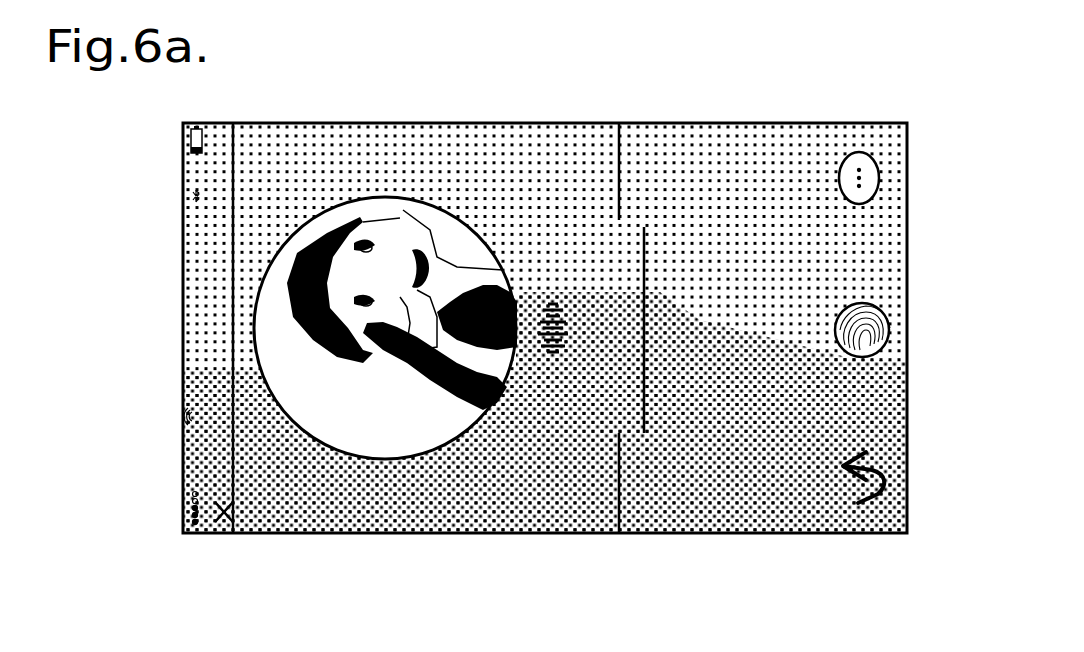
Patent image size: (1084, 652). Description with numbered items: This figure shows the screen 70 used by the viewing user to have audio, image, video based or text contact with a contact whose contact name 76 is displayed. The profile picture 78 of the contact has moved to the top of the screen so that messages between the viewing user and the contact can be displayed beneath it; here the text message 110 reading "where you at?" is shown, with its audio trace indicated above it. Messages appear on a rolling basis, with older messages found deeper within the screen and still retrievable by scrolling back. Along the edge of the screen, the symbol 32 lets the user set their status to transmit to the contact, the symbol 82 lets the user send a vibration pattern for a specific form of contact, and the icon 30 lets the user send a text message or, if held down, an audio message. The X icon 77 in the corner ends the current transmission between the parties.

The screen 70 is at (388, 145).
The contact name 76 is at (222, 358).
The X icon 77 is at (225, 520).
The profile picture 78 is at (362, 202).
The text message 110 is at (592, 228).
The icon 30 is at (862, 166).
The symbol 82 is at (862, 310).
The symbol 32 is at (860, 467).